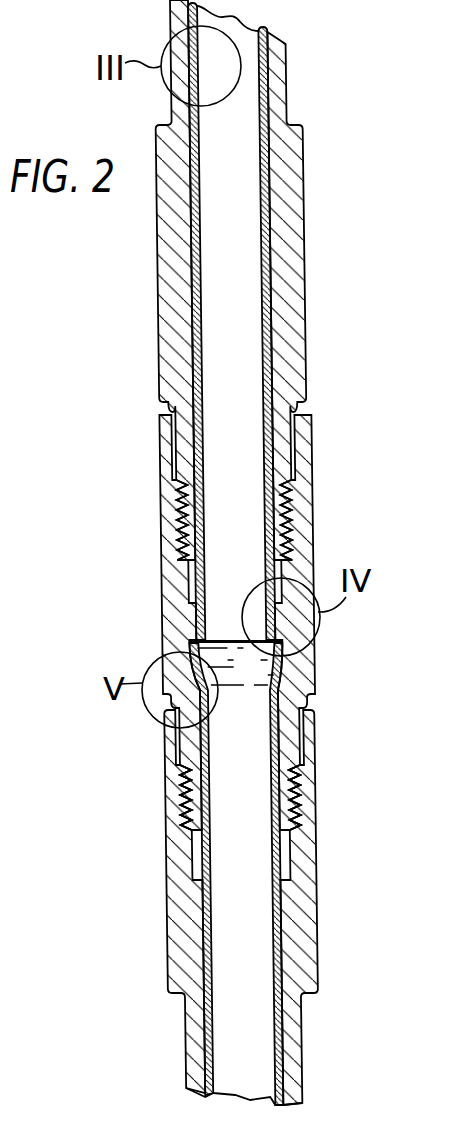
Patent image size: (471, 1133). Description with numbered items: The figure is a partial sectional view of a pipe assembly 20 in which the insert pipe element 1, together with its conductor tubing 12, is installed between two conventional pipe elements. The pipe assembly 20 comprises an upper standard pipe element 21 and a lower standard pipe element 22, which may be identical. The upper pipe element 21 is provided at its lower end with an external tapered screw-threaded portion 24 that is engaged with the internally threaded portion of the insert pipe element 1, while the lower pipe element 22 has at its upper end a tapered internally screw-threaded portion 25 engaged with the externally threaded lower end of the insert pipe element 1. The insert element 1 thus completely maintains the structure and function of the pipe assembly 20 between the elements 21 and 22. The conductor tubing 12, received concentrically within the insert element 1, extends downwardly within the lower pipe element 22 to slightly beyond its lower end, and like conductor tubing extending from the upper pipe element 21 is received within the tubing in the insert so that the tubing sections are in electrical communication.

The insert pipe element 1 is at (224, 552).
The conductor tubing 12 is at (244, 265).
The pipe assembly 20 is at (197, 552).
The upper standard pipe element 21 is at (157, 308).
The lower standard pipe element 22 is at (172, 940).
The external tapered screw-threaded portion 24 is at (190, 506).
The tapered internally screw-threaded portion 25 is at (176, 815).